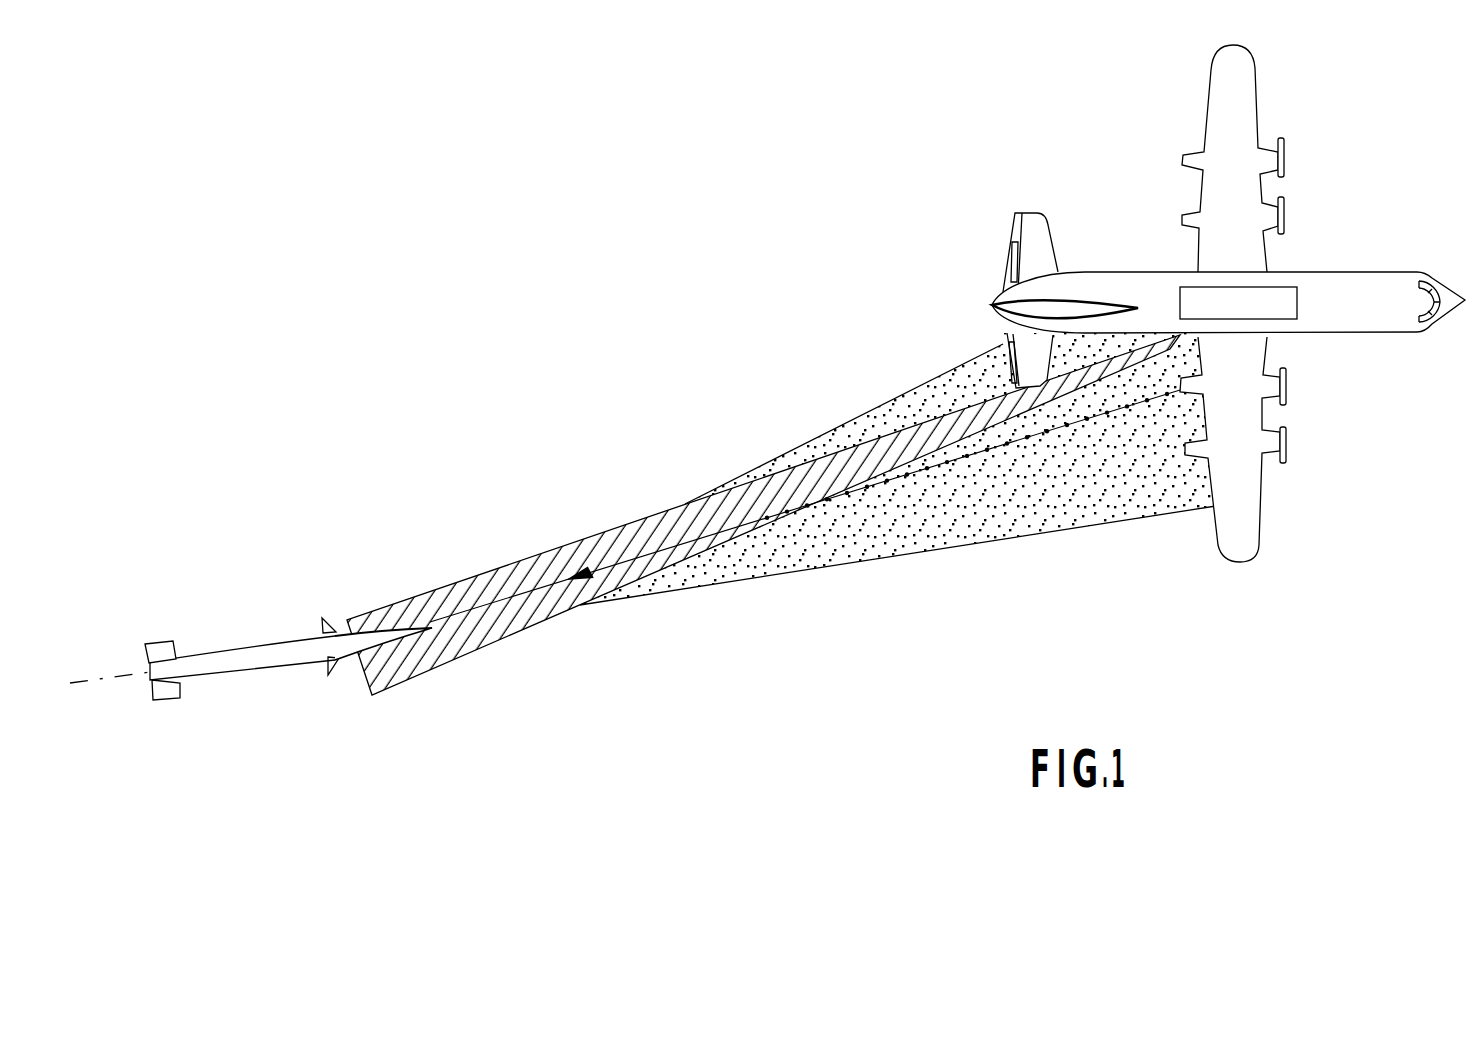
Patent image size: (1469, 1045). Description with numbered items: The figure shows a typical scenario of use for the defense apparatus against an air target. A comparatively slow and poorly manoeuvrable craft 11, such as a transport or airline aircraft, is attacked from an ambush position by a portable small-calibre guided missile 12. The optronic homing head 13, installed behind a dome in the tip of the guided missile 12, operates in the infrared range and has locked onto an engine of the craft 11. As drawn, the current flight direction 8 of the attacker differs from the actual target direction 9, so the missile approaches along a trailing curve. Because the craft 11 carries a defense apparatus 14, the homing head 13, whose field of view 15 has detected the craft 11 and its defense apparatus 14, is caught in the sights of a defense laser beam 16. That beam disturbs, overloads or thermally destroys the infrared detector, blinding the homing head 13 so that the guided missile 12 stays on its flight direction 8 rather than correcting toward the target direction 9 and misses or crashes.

The current flight direction 8 is at (95, 677).
The actual target direction 9 is at (942, 468).
The craft 11 is at (1353, 240).
The guided missile 12 is at (233, 658).
The homing head 13 is at (398, 632).
The defense apparatus 14 is at (1278, 310).
The field of view 15 is at (1008, 515).
The defense laser beam 16 is at (527, 577).